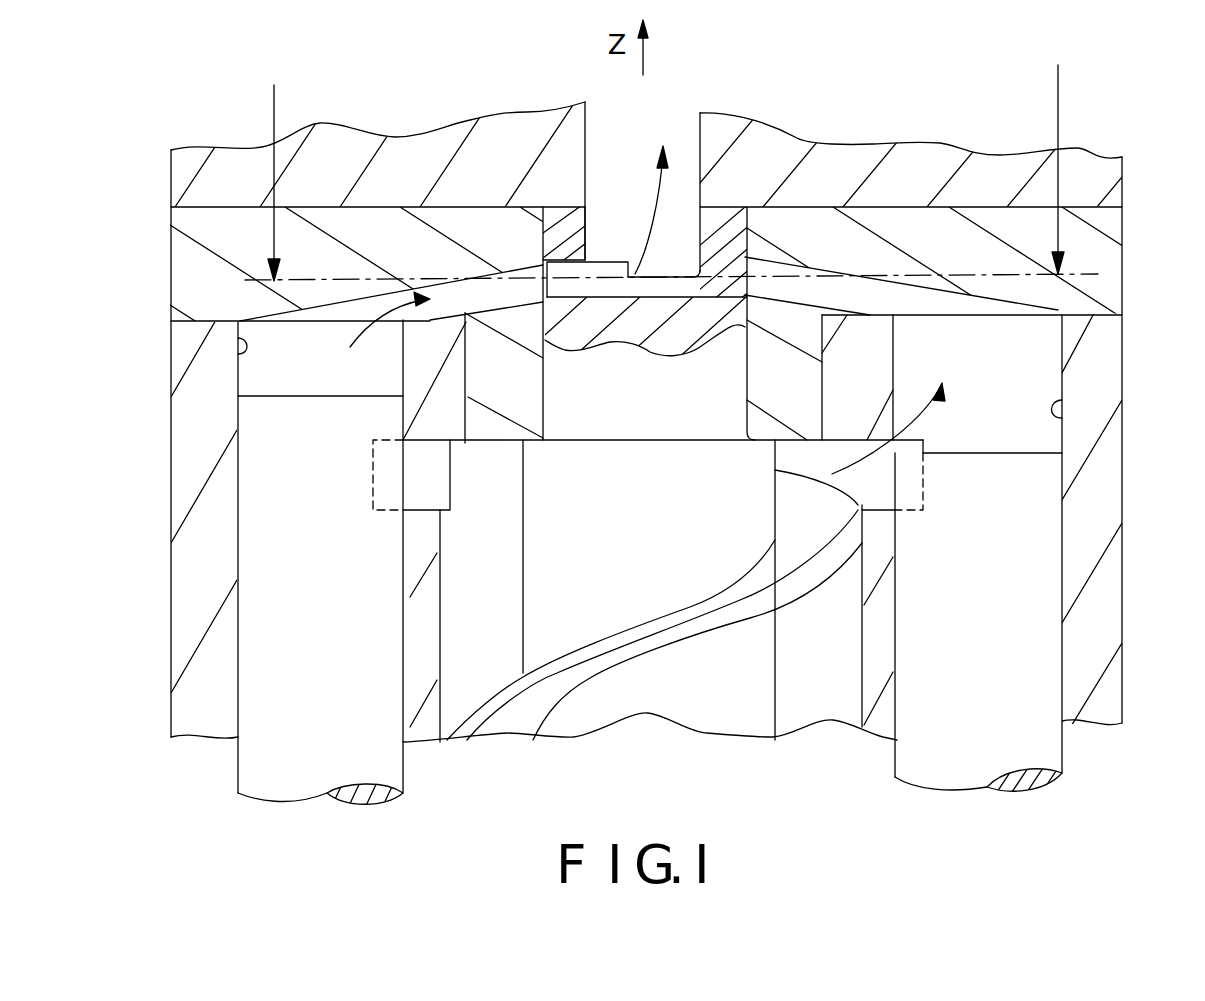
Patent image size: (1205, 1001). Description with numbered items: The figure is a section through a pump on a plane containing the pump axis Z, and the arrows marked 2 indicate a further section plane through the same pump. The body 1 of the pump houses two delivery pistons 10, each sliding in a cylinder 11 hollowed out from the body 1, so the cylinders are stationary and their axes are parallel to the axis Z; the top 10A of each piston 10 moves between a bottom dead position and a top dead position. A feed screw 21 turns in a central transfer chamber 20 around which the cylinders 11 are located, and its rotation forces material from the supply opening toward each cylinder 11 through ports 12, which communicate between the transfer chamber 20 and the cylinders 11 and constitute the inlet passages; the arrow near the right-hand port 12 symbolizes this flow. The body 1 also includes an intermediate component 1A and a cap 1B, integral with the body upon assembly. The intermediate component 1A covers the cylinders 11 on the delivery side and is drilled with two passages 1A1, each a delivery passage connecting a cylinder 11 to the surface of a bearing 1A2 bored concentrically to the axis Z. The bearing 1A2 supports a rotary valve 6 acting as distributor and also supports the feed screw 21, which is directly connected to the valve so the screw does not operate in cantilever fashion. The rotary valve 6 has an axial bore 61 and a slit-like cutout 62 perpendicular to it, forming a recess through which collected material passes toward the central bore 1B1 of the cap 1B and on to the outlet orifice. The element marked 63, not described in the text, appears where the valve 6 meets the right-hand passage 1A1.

The body 1 is at (197, 626).
The intermediate component 1A is at (1105, 248).
The cap 1B is at (407, 157).
The passages 1A1 is at (486, 290).
The bearing 1A2 is at (742, 232).
The central bore 1B1 is at (622, 137).
The section line 2 is at (663, 158).
The rotary valve 6 is at (720, 376).
The axial bore 61 is at (624, 220).
The cutout 62 is at (573, 279).
The outlet port 63 is at (887, 290).
The delivery pistons 10 is at (270, 772).
The top of the piston 10A is at (275, 390).
The cylinders 11 is at (236, 345).
The ports 12 is at (410, 476).
The central transfer chamber 20 is at (834, 706).
The feed screw 21 is at (567, 723).